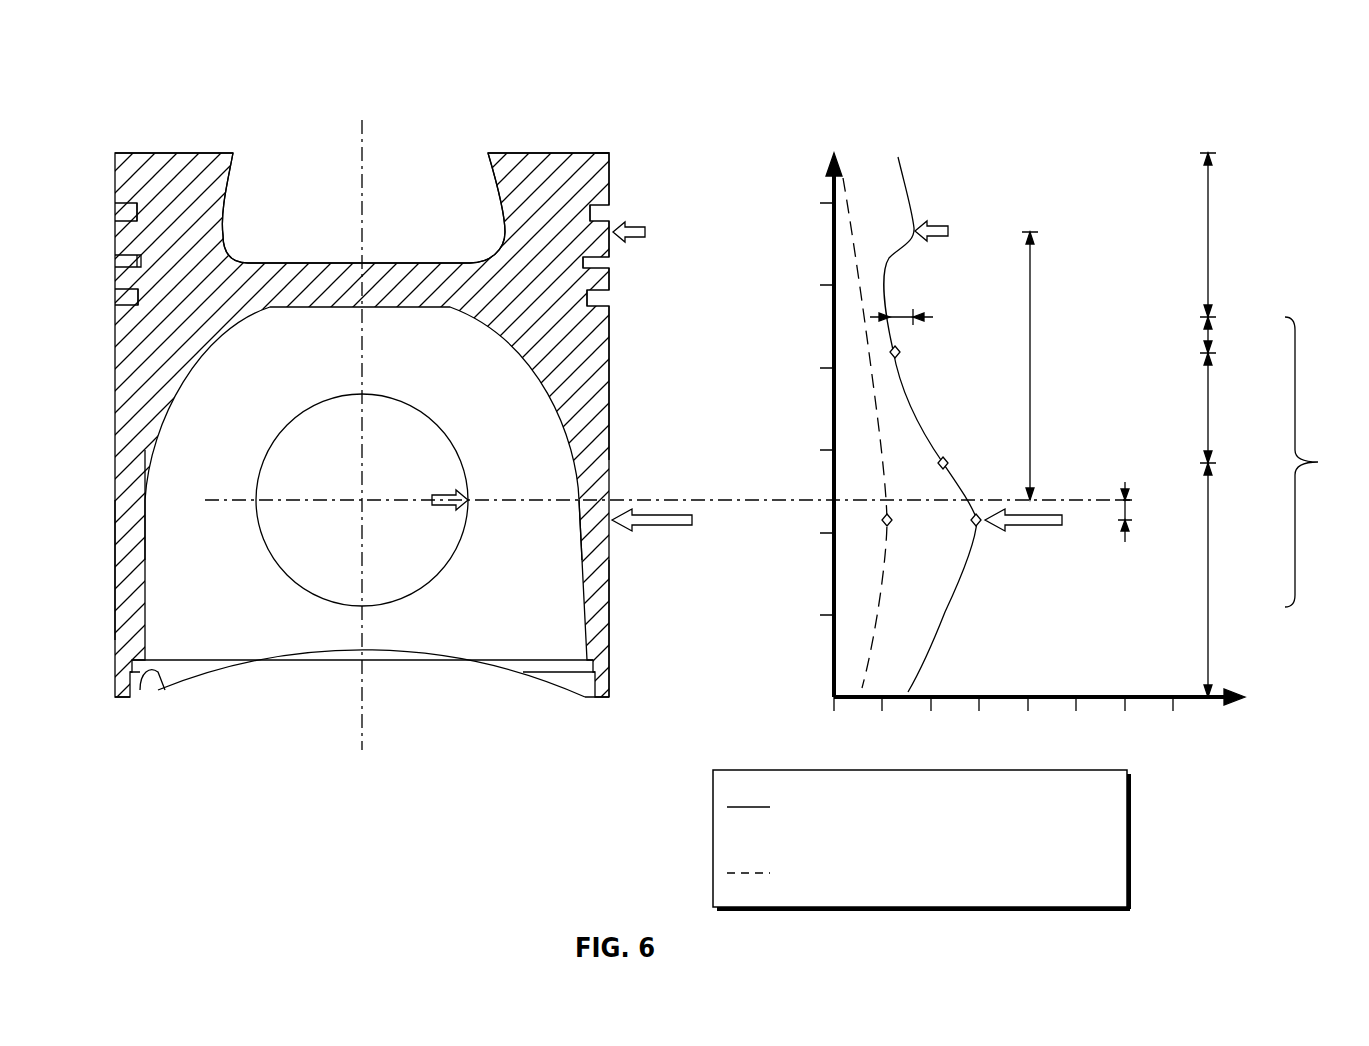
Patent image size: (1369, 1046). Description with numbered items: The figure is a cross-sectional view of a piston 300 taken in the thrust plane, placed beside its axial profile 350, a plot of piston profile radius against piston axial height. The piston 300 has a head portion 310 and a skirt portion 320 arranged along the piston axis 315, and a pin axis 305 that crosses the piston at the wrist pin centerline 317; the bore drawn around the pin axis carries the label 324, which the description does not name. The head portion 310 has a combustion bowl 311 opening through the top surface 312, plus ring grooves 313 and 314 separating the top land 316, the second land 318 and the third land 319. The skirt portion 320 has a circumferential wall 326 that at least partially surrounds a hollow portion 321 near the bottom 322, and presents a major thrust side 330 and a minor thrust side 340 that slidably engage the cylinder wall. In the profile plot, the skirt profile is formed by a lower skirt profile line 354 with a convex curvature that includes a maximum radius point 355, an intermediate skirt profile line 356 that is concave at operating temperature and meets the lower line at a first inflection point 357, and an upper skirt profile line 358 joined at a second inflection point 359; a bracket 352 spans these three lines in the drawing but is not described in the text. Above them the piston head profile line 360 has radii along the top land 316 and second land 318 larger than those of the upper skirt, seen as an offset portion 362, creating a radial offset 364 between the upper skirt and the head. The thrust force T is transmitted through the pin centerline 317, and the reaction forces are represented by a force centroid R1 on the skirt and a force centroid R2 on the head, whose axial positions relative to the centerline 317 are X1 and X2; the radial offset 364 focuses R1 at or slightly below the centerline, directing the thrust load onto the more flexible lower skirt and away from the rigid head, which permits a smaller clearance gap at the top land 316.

The piston 300 is at (158, 110).
The pin axis 305 is at (388, 490).
The head portion 310 is at (624, 192).
The combustion bowl 311 is at (280, 166).
The top surface 312 is at (178, 153).
The ring groove 313 is at (125, 212).
The ring groove 314 is at (125, 297).
The piston axis 315 is at (370, 138).
The top land 316 is at (612, 162).
The wrist pin centerline 317 is at (505, 498).
The second land 318 is at (613, 241).
The third land 319 is at (612, 279).
The skirt portion 320 is at (624, 349).
The hollow portion 321 is at (270, 640).
The bottom 322 is at (125, 700).
The pin bore 324 is at (463, 540).
The circumferential wall 326 is at (128, 477).
The major thrust side 330 is at (610, 628).
The minor thrust side 340 is at (115, 572).
The axial profile 350 is at (1067, 120).
The skirt axial range 352 is at (1326, 462).
The lower skirt profile line 354 is at (1210, 565).
The maximum radius point 355 is at (982, 525).
The intermediate skirt profile line 356 is at (1210, 412).
The first inflection point 357 is at (948, 462).
The upper skirt profile line 358 is at (1210, 338).
The second inflection point 359 is at (900, 355).
The piston head profile line 360 is at (1210, 228).
The offset portion 362 is at (915, 190).
The radial offset 364 is at (905, 315).
The thrust force T is at (445, 515).
The force centroid R1 is at (858, 526).
The force centroid R2 is at (798, 236).
The axial position of skirt reaction centroid X1 is at (1130, 510).
The axial position of head reaction centroid X2 is at (1032, 260).